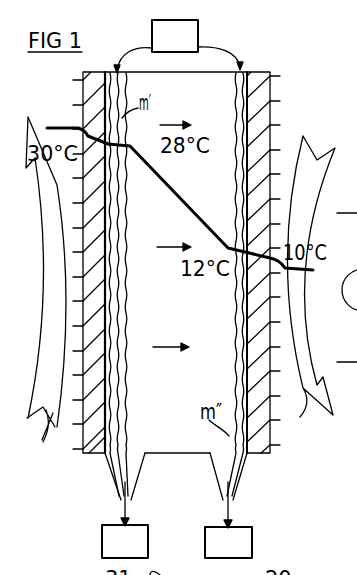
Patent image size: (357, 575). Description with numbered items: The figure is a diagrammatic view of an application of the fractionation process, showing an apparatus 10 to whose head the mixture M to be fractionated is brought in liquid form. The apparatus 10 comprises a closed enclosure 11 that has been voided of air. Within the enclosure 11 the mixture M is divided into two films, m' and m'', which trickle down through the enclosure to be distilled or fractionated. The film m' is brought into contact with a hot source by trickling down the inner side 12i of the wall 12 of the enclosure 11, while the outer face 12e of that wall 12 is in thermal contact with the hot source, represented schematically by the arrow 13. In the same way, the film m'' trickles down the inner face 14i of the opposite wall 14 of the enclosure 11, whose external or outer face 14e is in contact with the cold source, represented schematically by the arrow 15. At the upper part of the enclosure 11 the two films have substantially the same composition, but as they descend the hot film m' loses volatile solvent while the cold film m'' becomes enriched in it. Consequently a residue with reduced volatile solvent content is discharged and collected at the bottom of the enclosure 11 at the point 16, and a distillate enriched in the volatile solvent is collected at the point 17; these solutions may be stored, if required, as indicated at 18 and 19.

The apparatus 10 is at (270, 62).
The closed enclosure 11 is at (230, 80).
The wall 12 is at (100, 411).
The outer face of wall 12e is at (83, 95).
The inner side of wall 12i is at (105, 290).
The arrow (hot source) 13 is at (62, 313).
The wall 14 is at (262, 89).
The outer face of wall 14e is at (273, 119).
The inner face of wall 14i is at (244, 116).
The arrow (cold source) 15 is at (316, 306).
The collection point for residue 16 is at (119, 493).
The collection point for distillate 17 is at (237, 478).
The residue storage 18 is at (113, 536).
The distillate storage 19 is at (248, 538).